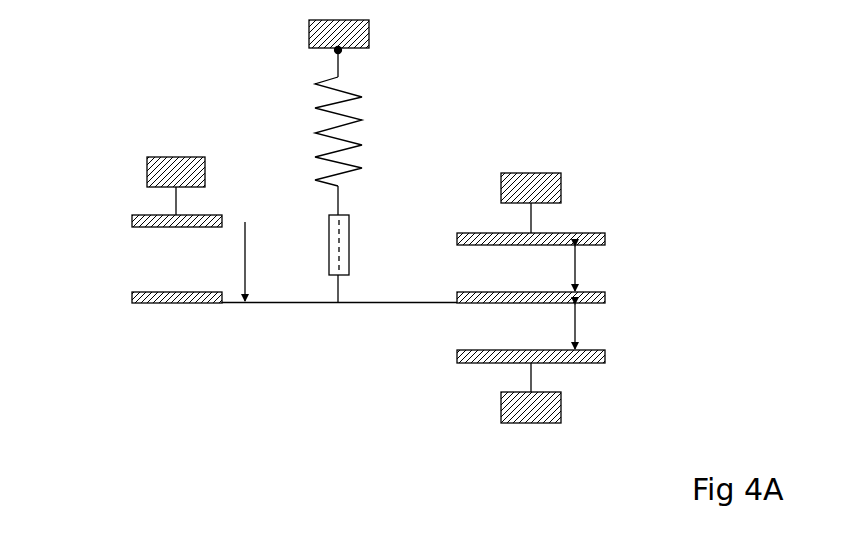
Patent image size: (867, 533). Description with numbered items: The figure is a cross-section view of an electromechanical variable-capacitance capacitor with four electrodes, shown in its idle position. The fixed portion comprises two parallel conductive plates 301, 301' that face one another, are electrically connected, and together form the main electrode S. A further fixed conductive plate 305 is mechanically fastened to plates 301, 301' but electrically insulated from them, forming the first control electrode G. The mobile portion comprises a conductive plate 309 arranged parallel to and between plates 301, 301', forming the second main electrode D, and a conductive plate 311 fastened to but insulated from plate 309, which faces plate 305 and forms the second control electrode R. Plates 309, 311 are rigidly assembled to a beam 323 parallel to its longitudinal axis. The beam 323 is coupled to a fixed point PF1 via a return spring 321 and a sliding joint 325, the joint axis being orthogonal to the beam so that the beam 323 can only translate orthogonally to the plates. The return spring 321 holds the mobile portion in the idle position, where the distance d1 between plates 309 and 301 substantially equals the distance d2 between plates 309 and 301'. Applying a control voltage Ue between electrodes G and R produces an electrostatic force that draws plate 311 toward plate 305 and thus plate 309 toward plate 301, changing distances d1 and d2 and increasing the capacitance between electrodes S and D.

The fixed point PF1 is at (341, 52).
The return spring 321 is at (362, 120).
The sliding joint 325 is at (349, 262).
The beam 323 is at (275, 304).
The conductive plate 305 is at (132, 222).
The first control electrode G is at (146, 192).
The control voltage Ue is at (263, 261).
The conductive plate 311 is at (132, 298).
The second control electrode R is at (132, 327).
The conductive plate 301 is at (555, 209).
The conductive plate 301' is at (555, 389).
The electrode S is at (537, 300).
The conductive plate 309 is at (503, 274).
The second main electrode D is at (562, 277).
The distance d1 is at (580, 268).
The distance d2 is at (580, 325).